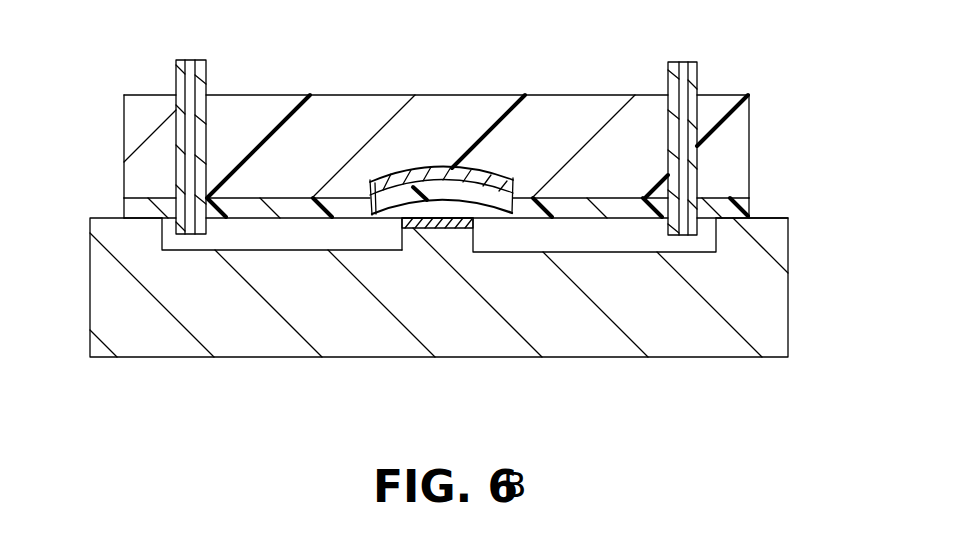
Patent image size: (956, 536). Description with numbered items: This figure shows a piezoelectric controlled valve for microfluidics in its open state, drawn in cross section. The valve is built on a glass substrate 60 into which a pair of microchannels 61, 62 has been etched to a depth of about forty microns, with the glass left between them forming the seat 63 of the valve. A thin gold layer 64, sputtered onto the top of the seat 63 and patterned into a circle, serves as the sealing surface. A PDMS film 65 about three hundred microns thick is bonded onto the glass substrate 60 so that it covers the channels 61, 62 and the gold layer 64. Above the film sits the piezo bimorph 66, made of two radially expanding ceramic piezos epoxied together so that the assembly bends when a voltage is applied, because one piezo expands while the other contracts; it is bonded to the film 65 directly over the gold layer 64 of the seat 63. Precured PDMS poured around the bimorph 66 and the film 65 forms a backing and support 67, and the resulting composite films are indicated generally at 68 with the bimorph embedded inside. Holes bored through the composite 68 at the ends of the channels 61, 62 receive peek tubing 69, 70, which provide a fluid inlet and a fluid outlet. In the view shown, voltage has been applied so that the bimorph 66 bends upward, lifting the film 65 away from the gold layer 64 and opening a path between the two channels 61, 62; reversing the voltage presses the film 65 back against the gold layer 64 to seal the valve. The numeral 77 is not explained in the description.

The glass substrate 60 is at (773, 309).
The microchannel 61 is at (582, 242).
The microchannel 62 is at (278, 240).
The seat 63 is at (445, 243).
The gold layer 64 is at (400, 226).
The PDMS film 65 is at (755, 203).
The piezo bimorph 66 is at (442, 165).
The backing and support 67 is at (750, 128).
The composite films 68 is at (90, 165).
The peek tubing 69 is at (669, 73).
The peek tubing 70 is at (203, 78).
The membrane electrode 77 is at (413, 207).